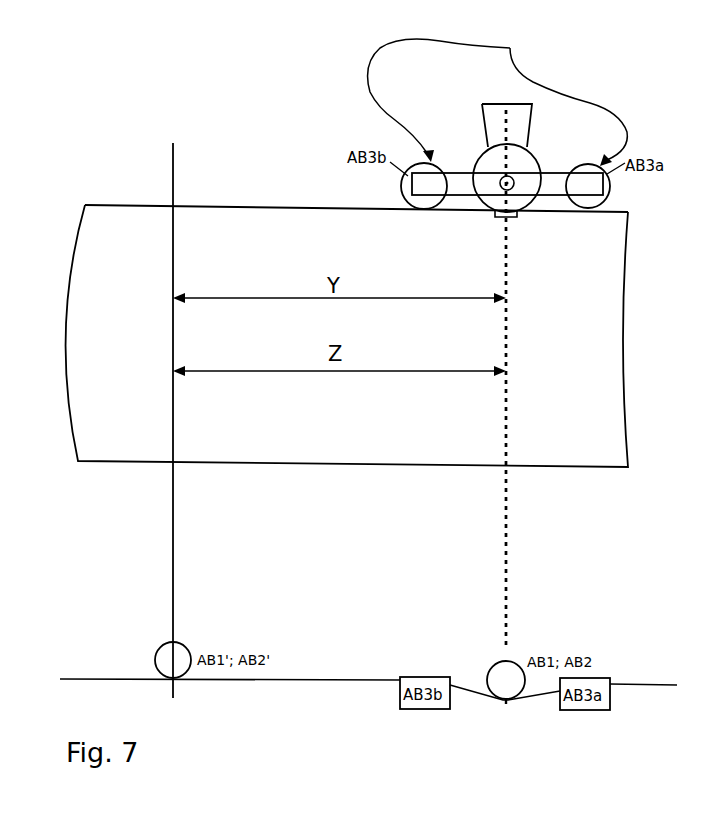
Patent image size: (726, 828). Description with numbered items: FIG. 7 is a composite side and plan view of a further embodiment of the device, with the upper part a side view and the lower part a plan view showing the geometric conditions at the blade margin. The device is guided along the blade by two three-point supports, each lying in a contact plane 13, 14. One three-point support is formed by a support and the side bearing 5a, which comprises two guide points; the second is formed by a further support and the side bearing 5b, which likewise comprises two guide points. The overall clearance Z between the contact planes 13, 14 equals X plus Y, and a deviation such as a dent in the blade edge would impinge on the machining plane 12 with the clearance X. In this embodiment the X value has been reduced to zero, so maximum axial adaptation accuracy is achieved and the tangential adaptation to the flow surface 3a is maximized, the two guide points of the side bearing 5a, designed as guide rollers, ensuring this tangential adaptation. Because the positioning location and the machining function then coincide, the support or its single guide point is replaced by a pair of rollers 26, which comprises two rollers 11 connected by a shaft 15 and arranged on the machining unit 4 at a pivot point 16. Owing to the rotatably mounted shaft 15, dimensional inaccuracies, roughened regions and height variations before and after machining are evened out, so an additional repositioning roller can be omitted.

The surface of workpiece 3a is at (305, 199).
The machining unit 4 is at (490, 157).
The side bearing 5a is at (512, 669).
The side bearing 5b is at (181, 659).
The rollers 11 is at (443, 202).
The machining plane 12 is at (507, 531).
The contact plane 13 is at (175, 160).
The contact plane 14 is at (507, 531).
The shaft 15 is at (443, 179).
The pivot point 16 is at (512, 178).
The pair of rollers 26 is at (498, 96).